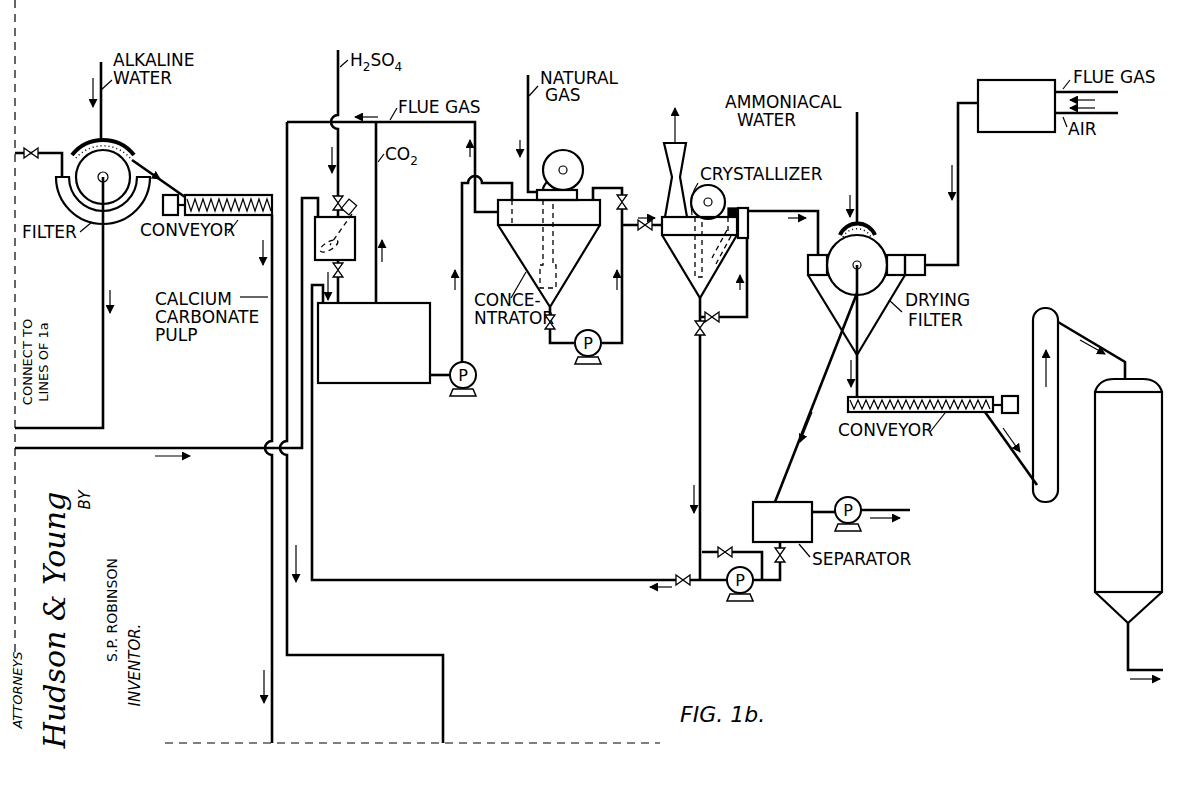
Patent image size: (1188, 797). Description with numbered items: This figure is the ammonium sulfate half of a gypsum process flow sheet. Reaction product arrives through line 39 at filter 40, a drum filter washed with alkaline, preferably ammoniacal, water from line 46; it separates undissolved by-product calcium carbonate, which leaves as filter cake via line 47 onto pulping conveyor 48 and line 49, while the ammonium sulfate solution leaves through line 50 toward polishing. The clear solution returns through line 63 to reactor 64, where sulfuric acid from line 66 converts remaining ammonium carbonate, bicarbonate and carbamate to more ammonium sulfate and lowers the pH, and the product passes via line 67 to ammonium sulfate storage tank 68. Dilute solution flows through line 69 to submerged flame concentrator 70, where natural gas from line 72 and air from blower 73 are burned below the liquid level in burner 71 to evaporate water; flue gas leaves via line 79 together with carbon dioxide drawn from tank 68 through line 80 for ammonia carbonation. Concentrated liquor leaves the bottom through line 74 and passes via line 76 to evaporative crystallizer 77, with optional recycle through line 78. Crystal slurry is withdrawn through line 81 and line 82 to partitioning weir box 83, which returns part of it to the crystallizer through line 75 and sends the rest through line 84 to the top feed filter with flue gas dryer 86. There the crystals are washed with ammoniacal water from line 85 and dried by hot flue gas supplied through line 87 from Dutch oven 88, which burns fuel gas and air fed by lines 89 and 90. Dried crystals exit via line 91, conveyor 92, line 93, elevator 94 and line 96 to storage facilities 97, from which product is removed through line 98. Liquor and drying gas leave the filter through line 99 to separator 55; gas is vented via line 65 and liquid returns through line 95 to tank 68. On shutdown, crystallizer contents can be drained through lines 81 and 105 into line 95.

The line 39 is at (62, 150).
The filter 40 is at (58, 192).
The line 46 is at (103, 119).
The line 47 is at (161, 187).
The pulping conveyor 48 is at (221, 195).
The line 49 is at (270, 377).
The line 50 is at (103, 315).
The separator 55 is at (753, 528).
The line 63 is at (226, 448).
The reactor 64 is at (345, 263).
The line 65 is at (890, 508).
The line 66 is at (335, 83).
The line 67 is at (335, 302).
The ammonium sulfate storage tank 68 is at (404, 303).
The line 69 is at (466, 359).
The submerged flame concentrator 70 is at (570, 276).
The burner 71 is at (556, 268).
The line 72 is at (531, 143).
The blower 73 is at (580, 164).
The line 74 is at (627, 328).
The line 75 is at (736, 214).
The line 76 is at (654, 232).
The evaporative crystallizer 77 is at (693, 273).
The line 78 is at (607, 187).
The line 79 is at (448, 122).
The line 80 is at (378, 212).
The line 81 is at (699, 434).
The line 82 is at (748, 316).
The partitioning weir box 83 is at (749, 227).
The line 84 is at (788, 210).
The line 85 is at (858, 186).
The top feed filter with flue gas dryer 86 is at (818, 292).
The line 87 is at (960, 177).
The Dutch oven 88 is at (998, 132).
The line 89 is at (1116, 94).
The line 90 is at (1118, 115).
The line 91 is at (860, 376).
The conveyor 92 is at (926, 397).
The line 93 is at (1014, 455).
The elevator 94 is at (1033, 373).
The line 95 is at (492, 578).
The line 96 is at (1091, 343).
The storage facilities 97 is at (1095, 552).
The line 98 is at (1126, 642).
The line 99 is at (831, 357).
The line 105 is at (738, 551).